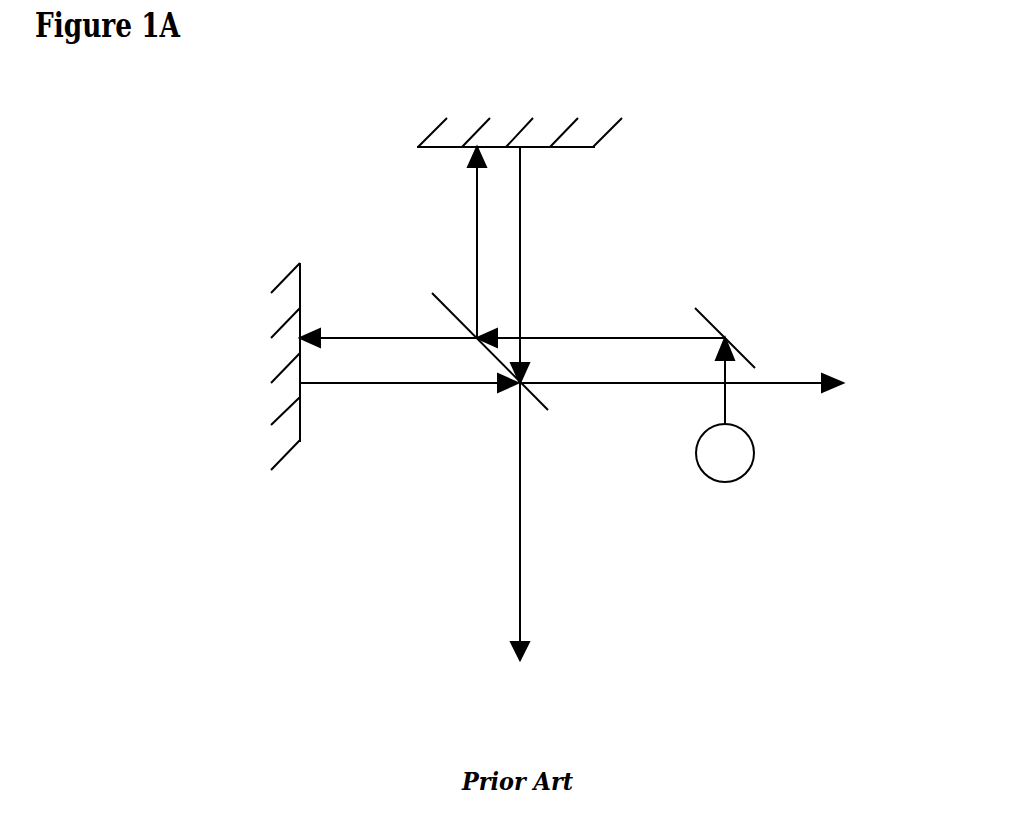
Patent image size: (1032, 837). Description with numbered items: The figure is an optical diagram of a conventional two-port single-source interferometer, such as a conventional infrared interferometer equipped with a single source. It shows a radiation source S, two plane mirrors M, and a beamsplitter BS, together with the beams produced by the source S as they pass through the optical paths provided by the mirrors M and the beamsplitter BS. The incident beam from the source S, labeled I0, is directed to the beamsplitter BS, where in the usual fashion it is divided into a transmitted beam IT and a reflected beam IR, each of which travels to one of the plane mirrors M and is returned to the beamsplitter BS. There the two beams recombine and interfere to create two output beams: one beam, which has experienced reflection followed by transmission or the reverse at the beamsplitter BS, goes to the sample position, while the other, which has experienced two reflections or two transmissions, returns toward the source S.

The plane mirror M is at (486, 263).
The beamsplitter BS is at (511, 371).
The radiation source S is at (734, 466).
The input beam intensity I0 is at (605, 346).
The reflected beam IR is at (521, 265).
The transmitted beam IT is at (409, 391).